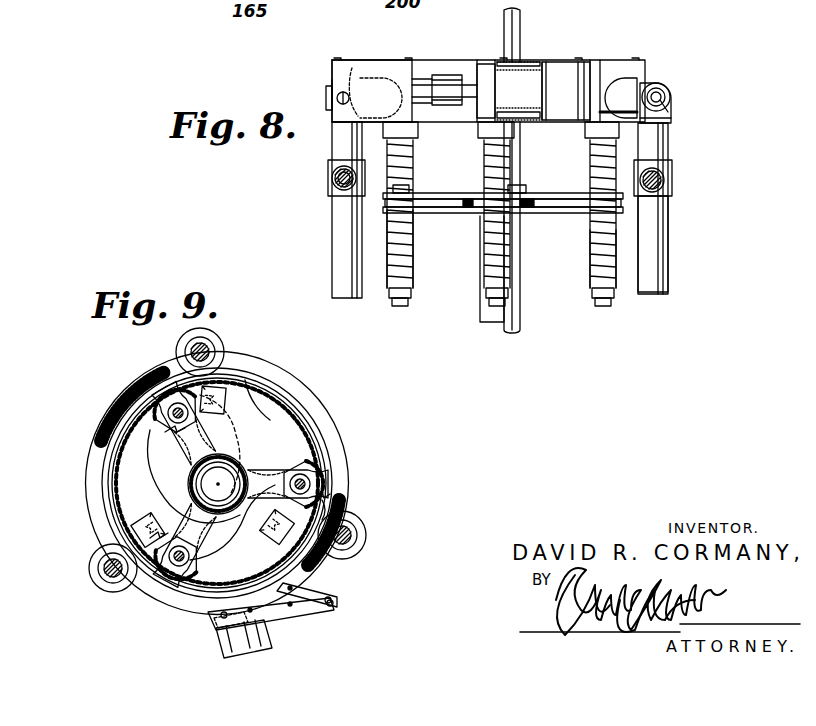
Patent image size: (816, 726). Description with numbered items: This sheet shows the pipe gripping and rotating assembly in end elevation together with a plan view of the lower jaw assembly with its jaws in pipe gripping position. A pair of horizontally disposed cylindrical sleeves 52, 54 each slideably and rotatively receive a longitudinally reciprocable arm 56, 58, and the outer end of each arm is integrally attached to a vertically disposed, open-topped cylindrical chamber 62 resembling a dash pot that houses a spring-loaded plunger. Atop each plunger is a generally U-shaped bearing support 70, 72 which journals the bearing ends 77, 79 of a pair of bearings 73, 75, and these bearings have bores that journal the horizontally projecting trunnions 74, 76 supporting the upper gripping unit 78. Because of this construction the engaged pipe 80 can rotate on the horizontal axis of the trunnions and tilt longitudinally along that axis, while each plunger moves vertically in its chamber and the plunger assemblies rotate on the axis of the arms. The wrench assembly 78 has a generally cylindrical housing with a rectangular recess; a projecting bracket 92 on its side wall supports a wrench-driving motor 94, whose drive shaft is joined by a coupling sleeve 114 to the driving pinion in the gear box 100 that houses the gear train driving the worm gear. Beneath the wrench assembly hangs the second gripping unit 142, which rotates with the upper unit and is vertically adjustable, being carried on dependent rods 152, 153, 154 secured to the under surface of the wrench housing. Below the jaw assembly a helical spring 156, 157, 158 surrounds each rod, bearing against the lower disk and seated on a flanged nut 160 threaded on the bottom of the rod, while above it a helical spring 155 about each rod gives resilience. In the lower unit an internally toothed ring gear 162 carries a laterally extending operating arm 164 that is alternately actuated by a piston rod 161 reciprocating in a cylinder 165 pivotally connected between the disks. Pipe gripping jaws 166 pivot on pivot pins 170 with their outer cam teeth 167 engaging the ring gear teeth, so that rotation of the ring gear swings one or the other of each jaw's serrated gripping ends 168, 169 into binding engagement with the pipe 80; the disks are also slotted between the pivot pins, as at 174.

In FIG. 8, the cylindrical sleeve 52 is at (330, 177).
In FIG. 8, the cylindrical sleeve 54 is at (666, 162).
In FIG. 8, the reciprocable arm 56 is at (330, 189).
In FIG. 8, the reciprocable arm 58 is at (676, 183).
In FIG. 8, the cylindrical chamber 62 is at (676, 262).
In FIG. 8, the U-shaped bearing support 70 is at (326, 112).
In FIG. 8, the U-shaped bearing support 72 is at (672, 77).
In FIG. 8, the bearing 73 is at (332, 80).
In FIG. 8, the trunnion 74 is at (326, 98).
In FIG. 8, the bearing 75 is at (664, 83).
In FIG. 8, the trunnion 76 is at (672, 98).
In FIG. 8, the bearing end 77 is at (352, 69).
In FIG. 8, the upper gripping unit 78 is at (598, 54).
In FIG. 8, the bearing end 79 is at (662, 110).
In FIG. 8, the pipe 80 is at (516, 25).
In FIG. 9, the pipe 80 is at (194, 484).
In FIG. 8, the projecting bracket 92 is at (490, 78).
In FIG. 8, the wrench-driving motor 94 is at (556, 74).
In FIG. 8, the gear box 100 is at (332, 73).
In FIG. 8, the coupling sleeve 114 is at (442, 74).
In FIG. 8, the second gripping unit 142 is at (444, 216).
In FIG. 9, the second gripping unit 142 is at (318, 388).
In FIG. 8, the dependent rod 152 is at (524, 156).
In FIG. 9, the dependent rod 152 is at (100, 569).
In FIG. 8, the dependent rod 153 is at (414, 156).
In FIG. 9, the dependent rod 153 is at (216, 351).
In FIG. 8, the dependent rod 154 is at (597, 267).
In FIG. 9, the dependent rod 154 is at (346, 536).
In FIG. 8, the helical spring 155 is at (408, 177).
In FIG. 8, the helical spring 156 is at (508, 258).
In FIG. 8, the helical spring 157 is at (412, 270).
In FIG. 8, the helical spring 158 is at (592, 289).
In FIG. 8, the flanged nut 160 is at (410, 304).
In FIG. 9, the piston rod 161 is at (298, 618).
In FIG. 9, the ring gear 162 is at (330, 508).
In FIG. 9, the operating arm 164 is at (326, 590).
In FIG. 9, the cylinder 165 is at (216, 643).
In FIG. 9, the pipe gripping jaw 166 is at (166, 432).
In FIG. 9, the outer cam teeth 167 is at (158, 398).
In FIG. 9, the gripping end 168 is at (232, 398).
In FIG. 9, the gripping end 169 is at (186, 468).
In FIG. 9, the pivot pin 170 is at (172, 408).
In FIG. 9, the slot 174 is at (303, 440).